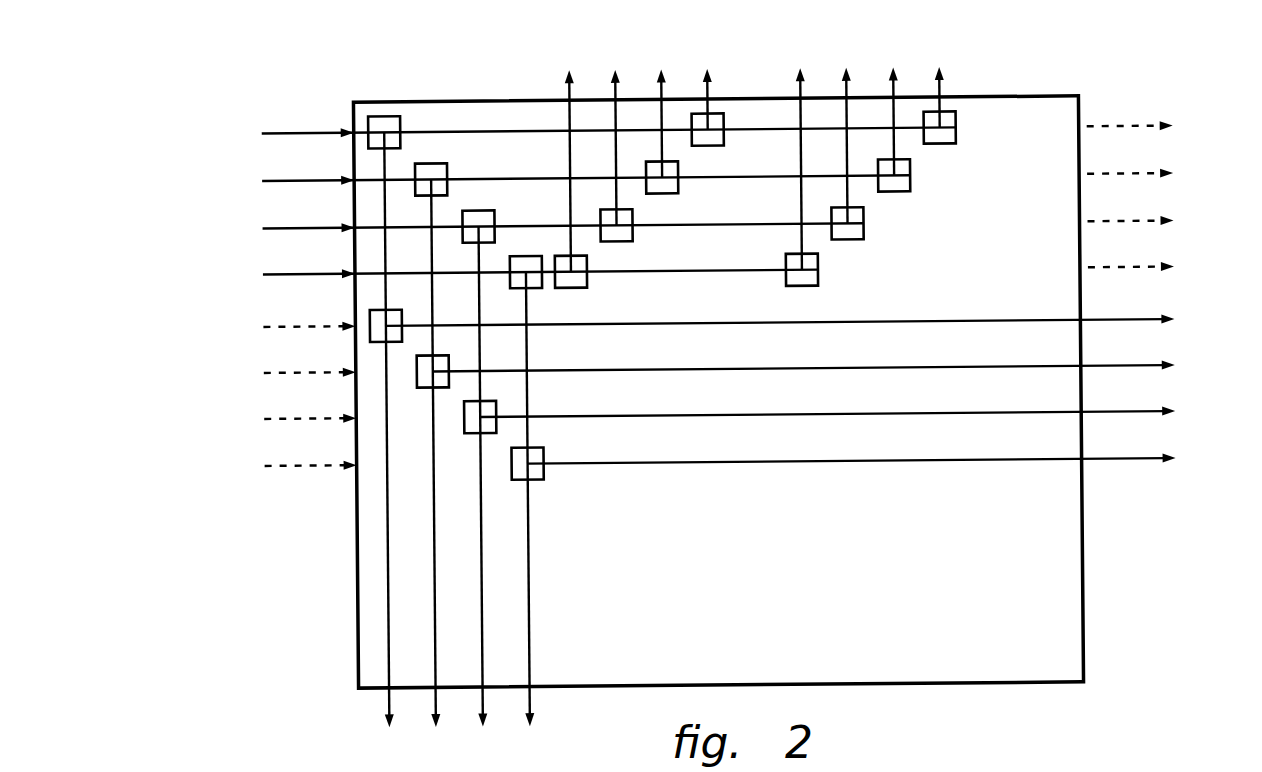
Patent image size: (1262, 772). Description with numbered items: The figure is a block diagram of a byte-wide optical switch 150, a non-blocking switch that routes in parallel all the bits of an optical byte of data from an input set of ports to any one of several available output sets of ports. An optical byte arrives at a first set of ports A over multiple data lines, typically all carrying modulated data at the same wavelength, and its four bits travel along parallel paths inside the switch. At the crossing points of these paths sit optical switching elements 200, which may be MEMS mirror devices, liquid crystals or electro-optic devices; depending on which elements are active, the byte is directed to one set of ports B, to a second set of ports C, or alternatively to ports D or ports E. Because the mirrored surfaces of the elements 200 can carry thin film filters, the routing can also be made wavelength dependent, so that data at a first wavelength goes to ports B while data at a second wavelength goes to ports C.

The byte-wide optical switch 150 is at (1083, 632).
The optical switching elements 200 is at (449, 168).
The first set of ports A is at (228, 106).
The set of ports B is at (546, 47).
The second set of ports C is at (778, 49).
The second set of ports D is at (355, 726).
The second set of ports E is at (1186, 294).